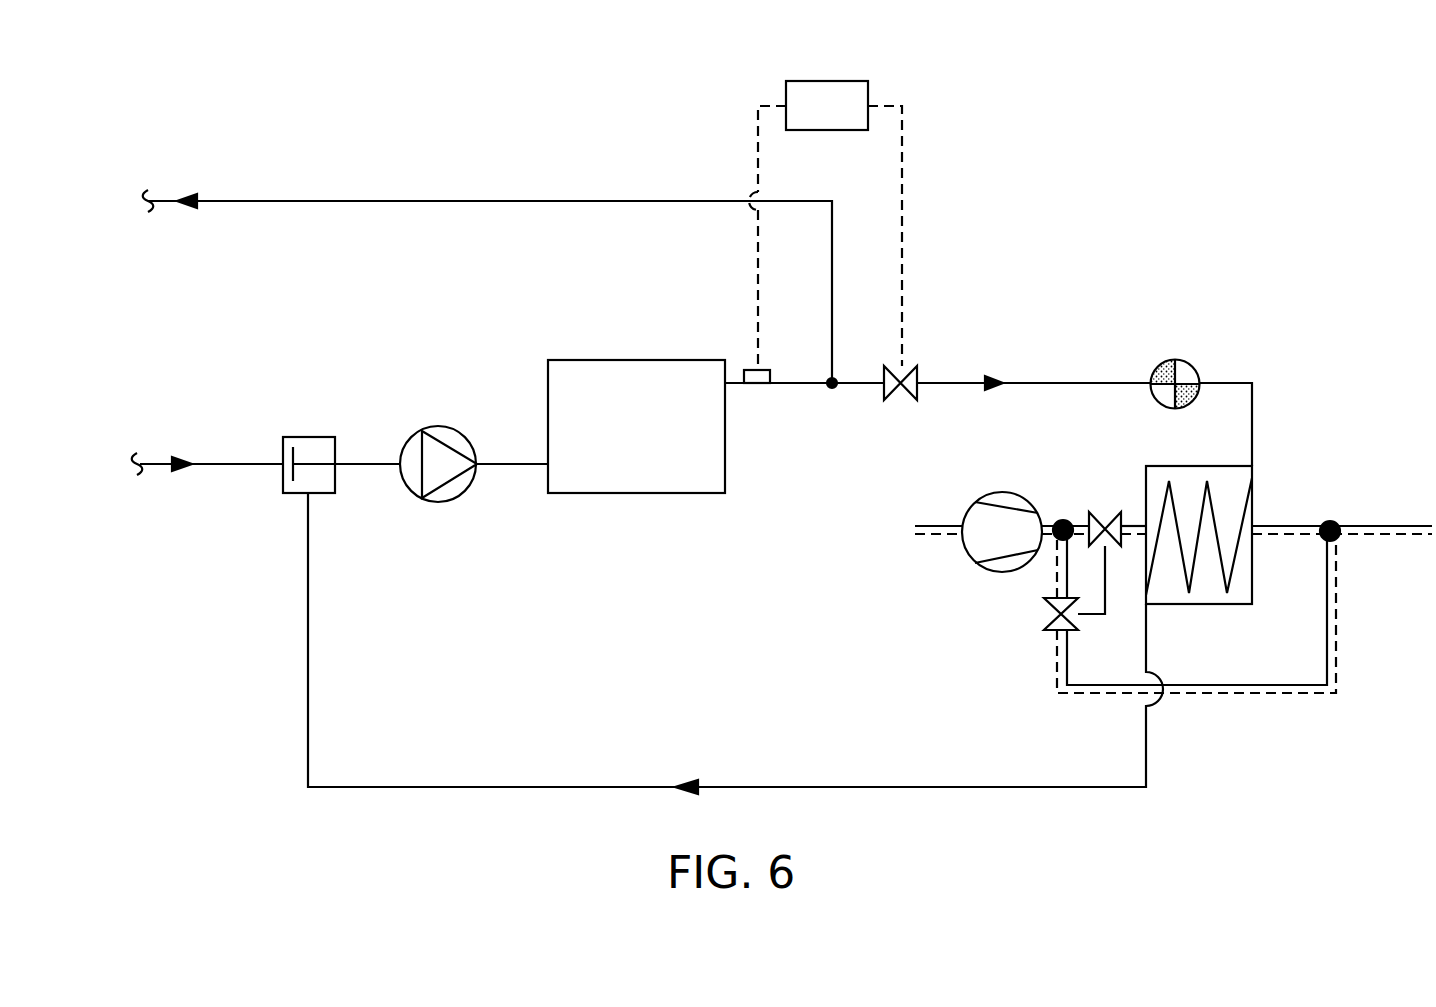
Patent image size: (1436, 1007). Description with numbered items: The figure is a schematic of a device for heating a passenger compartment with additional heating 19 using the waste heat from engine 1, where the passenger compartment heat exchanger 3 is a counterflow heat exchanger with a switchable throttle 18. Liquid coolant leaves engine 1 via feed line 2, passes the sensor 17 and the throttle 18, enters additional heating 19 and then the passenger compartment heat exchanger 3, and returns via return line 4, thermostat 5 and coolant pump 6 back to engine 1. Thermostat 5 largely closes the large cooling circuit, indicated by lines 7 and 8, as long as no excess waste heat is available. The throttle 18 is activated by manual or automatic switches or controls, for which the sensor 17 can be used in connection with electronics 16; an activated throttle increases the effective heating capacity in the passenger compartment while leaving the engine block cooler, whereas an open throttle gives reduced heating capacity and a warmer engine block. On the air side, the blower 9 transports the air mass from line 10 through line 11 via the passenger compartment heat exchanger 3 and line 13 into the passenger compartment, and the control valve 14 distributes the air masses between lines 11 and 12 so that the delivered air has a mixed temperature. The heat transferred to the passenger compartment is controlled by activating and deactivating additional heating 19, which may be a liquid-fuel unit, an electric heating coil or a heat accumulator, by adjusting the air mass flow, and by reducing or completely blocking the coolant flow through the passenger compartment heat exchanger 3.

The engine 1 is at (676, 493).
The feed line 2 is at (1086, 384).
The passenger compartment heat exchanger 3 is at (1198, 466).
The return line 4 is at (582, 787).
The thermostat 5 is at (305, 437).
The coolant pump 6 is at (436, 427).
The large cooling circuit line 7 is at (150, 463).
The large cooling circuit line 8 is at (157, 200).
The blower 9 is at (1000, 492).
The air line 10 is at (943, 523).
The air line 11 is at (1128, 520).
The air line 12 is at (1099, 692).
The air line 13 is at (1373, 526).
The control valve 14 is at (1087, 617).
The electronics 16 is at (848, 81).
The sensor 17 is at (760, 384).
The throttle 18 is at (886, 400).
The additional heating 19 is at (1186, 363).